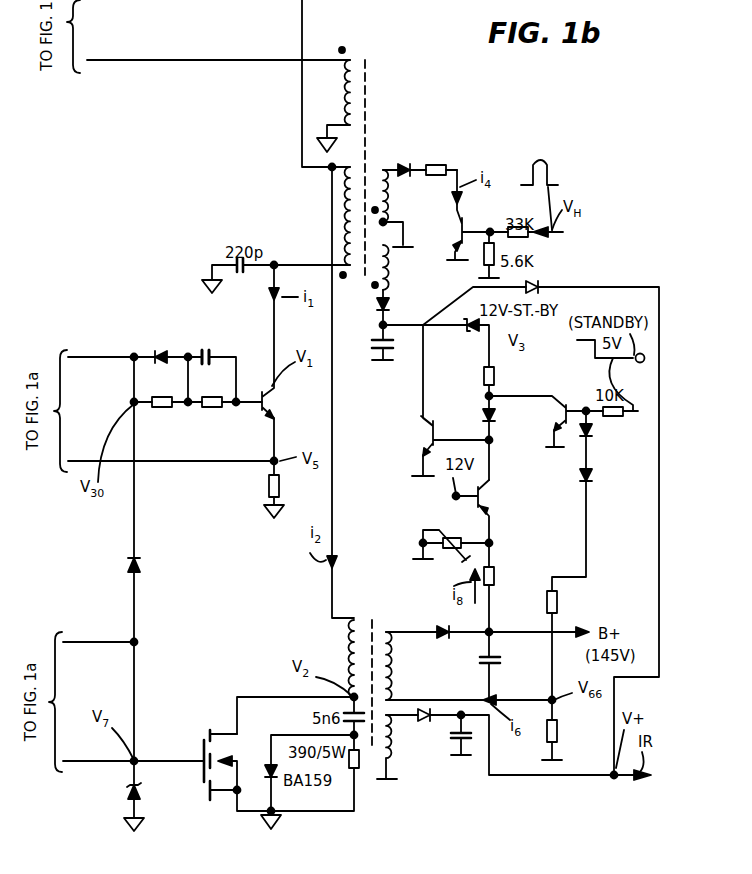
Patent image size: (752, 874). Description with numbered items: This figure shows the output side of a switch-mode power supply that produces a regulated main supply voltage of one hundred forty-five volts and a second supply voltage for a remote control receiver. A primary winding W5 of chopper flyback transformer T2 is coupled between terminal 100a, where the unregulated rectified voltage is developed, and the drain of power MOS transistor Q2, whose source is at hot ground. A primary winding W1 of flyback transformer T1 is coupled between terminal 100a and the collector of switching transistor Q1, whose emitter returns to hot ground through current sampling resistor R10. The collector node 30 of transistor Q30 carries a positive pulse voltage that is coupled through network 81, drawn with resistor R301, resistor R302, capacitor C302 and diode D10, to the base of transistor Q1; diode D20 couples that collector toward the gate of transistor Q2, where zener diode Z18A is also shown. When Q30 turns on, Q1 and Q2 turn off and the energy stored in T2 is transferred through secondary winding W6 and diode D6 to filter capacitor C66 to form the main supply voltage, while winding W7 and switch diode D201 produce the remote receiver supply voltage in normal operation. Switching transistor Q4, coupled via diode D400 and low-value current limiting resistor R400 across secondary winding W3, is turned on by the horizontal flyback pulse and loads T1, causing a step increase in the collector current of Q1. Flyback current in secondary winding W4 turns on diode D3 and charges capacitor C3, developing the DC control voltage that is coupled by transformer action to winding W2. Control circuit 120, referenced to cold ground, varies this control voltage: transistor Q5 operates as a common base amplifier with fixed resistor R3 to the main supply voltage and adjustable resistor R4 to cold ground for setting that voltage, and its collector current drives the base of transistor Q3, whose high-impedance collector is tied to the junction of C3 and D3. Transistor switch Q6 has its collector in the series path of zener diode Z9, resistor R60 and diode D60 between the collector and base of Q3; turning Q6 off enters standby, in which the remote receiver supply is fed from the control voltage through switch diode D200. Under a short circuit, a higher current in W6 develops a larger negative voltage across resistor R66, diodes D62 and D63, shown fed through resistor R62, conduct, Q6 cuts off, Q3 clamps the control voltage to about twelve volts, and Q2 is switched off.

The terminal 100a is at (327, 174).
The base node of transistor Q30 30 is at (134, 404).
The network 81 is at (222, 393).
The control circuit 120 is at (624, 567).
The flyback transformer T1 is at (338, 161).
The chopper flyback transformer T2 is at (372, 684).
The primary winding W1 is at (325, 216).
The secondary winding W2 is at (331, 106).
The secondary winding W3 is at (400, 196).
The secondary winding W4 is at (401, 267).
The primary winding W5 is at (339, 658).
The secondary winding W6 is at (402, 666).
The winding W7 is at (398, 747).
The switching transistor Q1 is at (294, 363).
The power MOS transistor Q2 is at (208, 756).
The transistor Q3 is at (430, 400).
The switching transistor Q4 is at (449, 217).
The transistor Q5 is at (498, 523).
The transistor switch Q6 is at (537, 421).
The transistor Q30 is at (106, 415).
The switching diode D3 is at (396, 314).
The diode D6 is at (481, 655).
The diode D10 is at (160, 334).
The diode D20 is at (153, 565).
The diode D60 is at (471, 439).
The diode D62 is at (604, 438).
The diode D63 is at (604, 482).
The switch diode D200 is at (555, 281).
The switch diode D201 is at (425, 722).
The diode D400 is at (401, 149).
The fixed value resistor R3 is at (505, 591).
The adjustable resistor R4 is at (419, 543).
The emitter current sampling resistor R10 is at (258, 489).
The resistor R60 is at (512, 384).
The resistor 1K R62 is at (571, 605).
The resistor R66 is at (570, 730).
The resistor R301 is at (162, 424).
The resistor 1K R302 is at (212, 424).
The current limiting resistor R400 is at (451, 149).
The capacitor C3 is at (375, 351).
The filter capacitor C66 is at (509, 666).
The capacitor 220nF C302 is at (209, 335).
The zener diode Z9 is at (470, 342).
The zener diode 18V Z18A is at (153, 807).